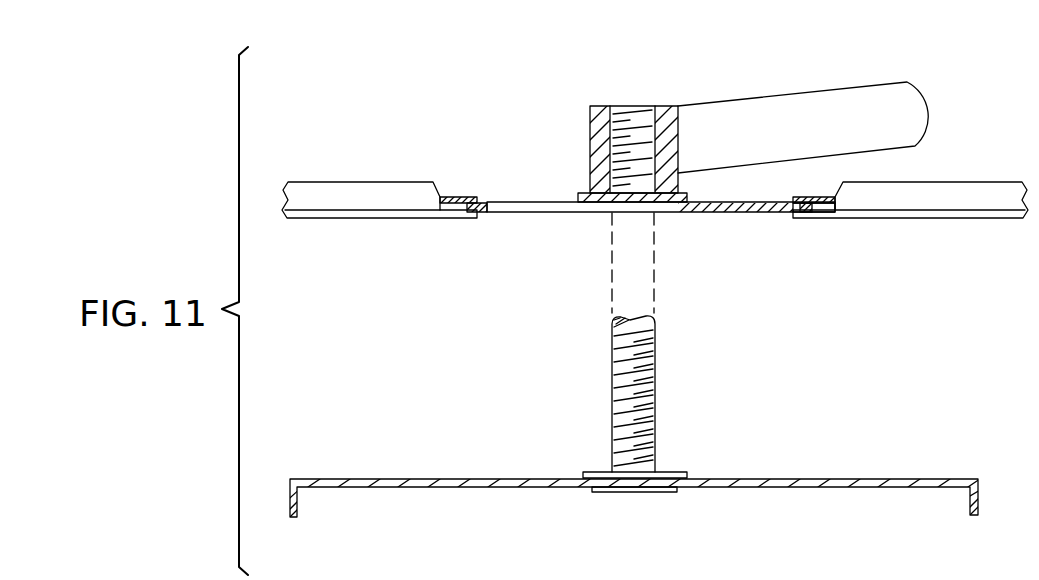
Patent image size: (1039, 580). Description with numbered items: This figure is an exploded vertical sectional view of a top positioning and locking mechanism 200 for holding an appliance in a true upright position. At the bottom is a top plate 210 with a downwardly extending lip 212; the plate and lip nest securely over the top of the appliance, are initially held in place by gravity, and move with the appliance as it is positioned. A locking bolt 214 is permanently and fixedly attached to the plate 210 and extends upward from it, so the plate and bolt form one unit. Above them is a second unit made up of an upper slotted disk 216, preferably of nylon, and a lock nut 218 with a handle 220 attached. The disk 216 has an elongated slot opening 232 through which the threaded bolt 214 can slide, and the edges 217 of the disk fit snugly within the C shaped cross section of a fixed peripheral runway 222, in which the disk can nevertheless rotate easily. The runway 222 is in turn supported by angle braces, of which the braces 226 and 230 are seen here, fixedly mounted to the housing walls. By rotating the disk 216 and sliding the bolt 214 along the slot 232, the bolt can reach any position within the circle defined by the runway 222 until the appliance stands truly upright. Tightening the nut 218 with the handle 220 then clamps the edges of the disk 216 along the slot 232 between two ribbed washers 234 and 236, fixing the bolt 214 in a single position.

The panel fastening assembly 200 is at (808, 394).
The top plate 210 is at (338, 478).
The downwardly extending lip 212 is at (297, 497).
The locking bolt 214 is at (657, 388).
The upper slotted disk 216 is at (748, 212).
The edges of the disk 217 is at (482, 212).
The lock nut 218 is at (663, 107).
The handle 220 is at (740, 107).
The fixed peripheral runway 222 is at (455, 197).
The angle brace 226 is at (953, 186).
The angle brace 230 is at (328, 182).
The elongated slot opening 232 is at (547, 212).
The ribbed washer 234 is at (582, 194).
The ribbed washer 236 is at (660, 472).